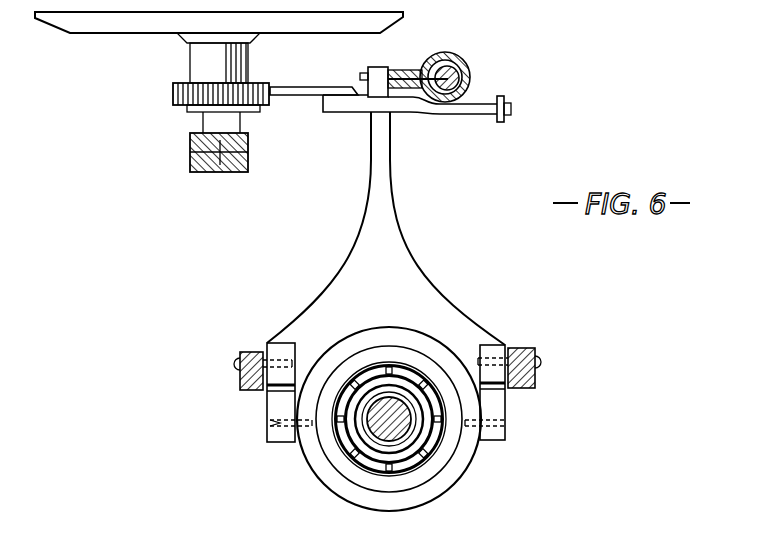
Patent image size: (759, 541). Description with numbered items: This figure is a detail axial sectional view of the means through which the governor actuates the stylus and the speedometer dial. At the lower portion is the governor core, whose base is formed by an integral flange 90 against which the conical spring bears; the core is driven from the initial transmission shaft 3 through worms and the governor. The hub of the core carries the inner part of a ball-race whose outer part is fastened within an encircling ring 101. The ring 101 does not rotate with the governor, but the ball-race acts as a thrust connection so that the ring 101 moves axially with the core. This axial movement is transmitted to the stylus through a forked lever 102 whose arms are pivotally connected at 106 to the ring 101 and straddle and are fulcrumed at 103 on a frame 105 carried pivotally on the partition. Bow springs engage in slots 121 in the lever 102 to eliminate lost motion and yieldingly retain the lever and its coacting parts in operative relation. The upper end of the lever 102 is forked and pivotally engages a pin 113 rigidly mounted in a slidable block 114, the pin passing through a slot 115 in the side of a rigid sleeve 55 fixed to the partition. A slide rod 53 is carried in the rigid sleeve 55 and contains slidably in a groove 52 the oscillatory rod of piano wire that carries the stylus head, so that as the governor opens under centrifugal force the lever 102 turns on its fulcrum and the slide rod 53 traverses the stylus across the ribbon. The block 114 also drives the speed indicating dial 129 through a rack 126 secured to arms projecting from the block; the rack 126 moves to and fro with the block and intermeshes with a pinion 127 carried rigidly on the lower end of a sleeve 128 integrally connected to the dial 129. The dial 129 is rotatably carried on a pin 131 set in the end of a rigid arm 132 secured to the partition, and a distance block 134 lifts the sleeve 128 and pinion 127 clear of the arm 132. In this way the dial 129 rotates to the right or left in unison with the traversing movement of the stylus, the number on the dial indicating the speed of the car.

The speed indicating dial 129 is at (80, 32).
The sleeve 128 is at (238, 62).
The pinion 127 is at (173, 97).
The distance block 134 is at (228, 123).
The rigid arm 132 is at (190, 150).
The pin 131 is at (247, 158).
The rack 126 is at (320, 100).
The pin 113 is at (363, 74).
The slidable block 114 is at (405, 70).
The slot 115 is at (423, 60).
The groove 52 is at (462, 60).
The rigid sleeve 55 is at (471, 77).
The slide rod 53 is at (478, 88).
The forked lever 102 is at (388, 247).
The slots 121 is at (263, 393).
The frame 105 is at (250, 352).
The fulcrum 103 is at (306, 357).
The pivotal connection 106 is at (470, 424).
The encircling ring 101 is at (343, 491).
The flange 90 is at (430, 497).
The initial transmission shaft 3 is at (410, 437).